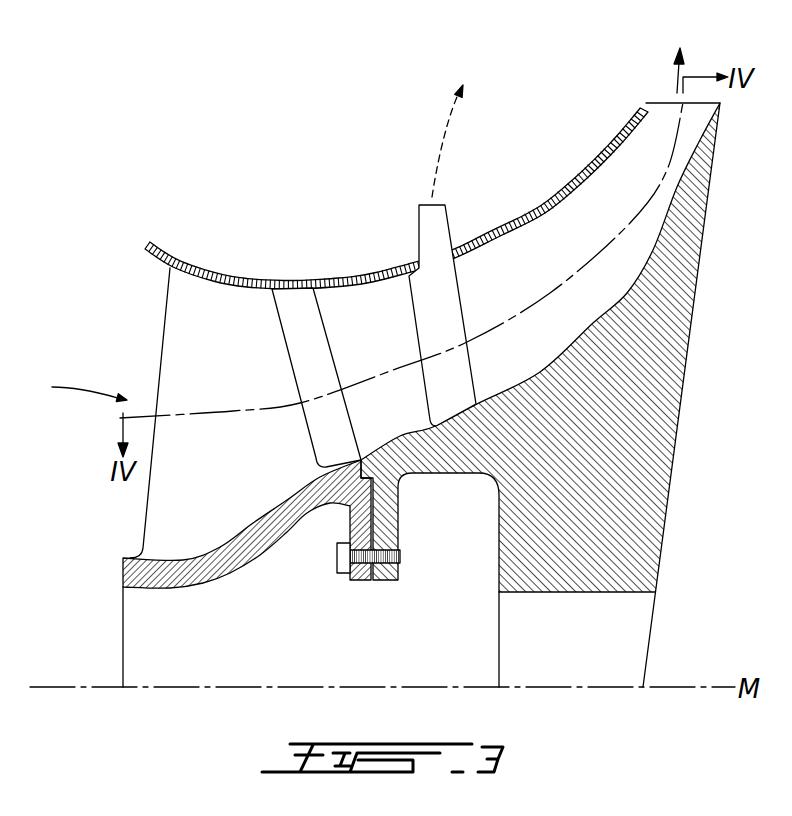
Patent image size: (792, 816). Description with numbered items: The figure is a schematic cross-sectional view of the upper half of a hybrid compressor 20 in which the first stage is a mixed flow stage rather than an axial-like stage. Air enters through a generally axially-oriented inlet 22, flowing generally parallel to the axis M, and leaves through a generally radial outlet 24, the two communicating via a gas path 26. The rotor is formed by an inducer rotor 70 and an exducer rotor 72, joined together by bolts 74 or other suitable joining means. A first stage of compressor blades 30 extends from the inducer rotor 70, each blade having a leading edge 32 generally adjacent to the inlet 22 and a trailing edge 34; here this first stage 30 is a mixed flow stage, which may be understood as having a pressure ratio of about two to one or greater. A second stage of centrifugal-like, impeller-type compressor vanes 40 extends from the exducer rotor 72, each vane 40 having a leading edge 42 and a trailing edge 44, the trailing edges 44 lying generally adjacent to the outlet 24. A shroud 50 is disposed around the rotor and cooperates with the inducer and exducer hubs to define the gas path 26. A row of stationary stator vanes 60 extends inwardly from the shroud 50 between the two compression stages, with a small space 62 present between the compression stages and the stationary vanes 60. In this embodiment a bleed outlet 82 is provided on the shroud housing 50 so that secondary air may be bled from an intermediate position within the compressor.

The hybrid compressor 20 is at (205, 128).
The inlet 22 is at (113, 370).
The outlet 24 is at (697, 45).
The gas path 26 is at (72, 386).
The first stage of compressor blades 30 is at (222, 387).
The leading edge 32 is at (163, 322).
The trailing edge 34 is at (283, 328).
The second stage of centrifugal-like compressor vanes 40 is at (476, 293).
The leading edge 42 is at (458, 321).
The trailing edge 44 is at (663, 102).
The shroud 50 is at (168, 268).
The stationary stator vanes 60 is at (392, 358).
The small space 62 is at (420, 303).
The inducer rotor 70 is at (123, 580).
The exducer rotor 72 is at (648, 487).
The bolts 74 is at (339, 556).
The bleed outlet 82 is at (445, 222).